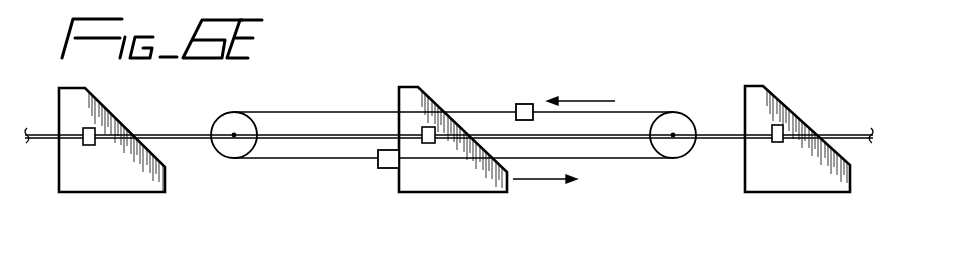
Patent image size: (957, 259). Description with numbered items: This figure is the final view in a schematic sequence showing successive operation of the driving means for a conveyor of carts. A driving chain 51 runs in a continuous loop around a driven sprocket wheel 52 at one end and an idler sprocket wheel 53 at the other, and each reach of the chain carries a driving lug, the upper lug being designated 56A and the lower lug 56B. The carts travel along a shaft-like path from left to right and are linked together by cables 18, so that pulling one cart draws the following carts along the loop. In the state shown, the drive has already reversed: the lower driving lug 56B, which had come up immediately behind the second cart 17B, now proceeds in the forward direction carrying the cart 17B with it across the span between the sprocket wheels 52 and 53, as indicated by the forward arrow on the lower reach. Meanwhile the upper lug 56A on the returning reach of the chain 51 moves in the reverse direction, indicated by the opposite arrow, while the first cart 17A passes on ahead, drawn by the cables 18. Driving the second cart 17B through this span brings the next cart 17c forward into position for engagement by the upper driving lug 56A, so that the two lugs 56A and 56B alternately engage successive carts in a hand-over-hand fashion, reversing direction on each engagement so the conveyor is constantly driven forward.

The cart 17A is at (780, 93).
The cart 17B is at (430, 93).
The cart 17c is at (100, 103).
The cables 18 is at (712, 142).
The driving chain 51 is at (308, 112).
The driven sprocket wheel 52 is at (683, 112).
The idler sprocket wheel 53 is at (221, 114).
The upper driving lug 56A is at (527, 104).
The lower driving lug 56B is at (388, 170).